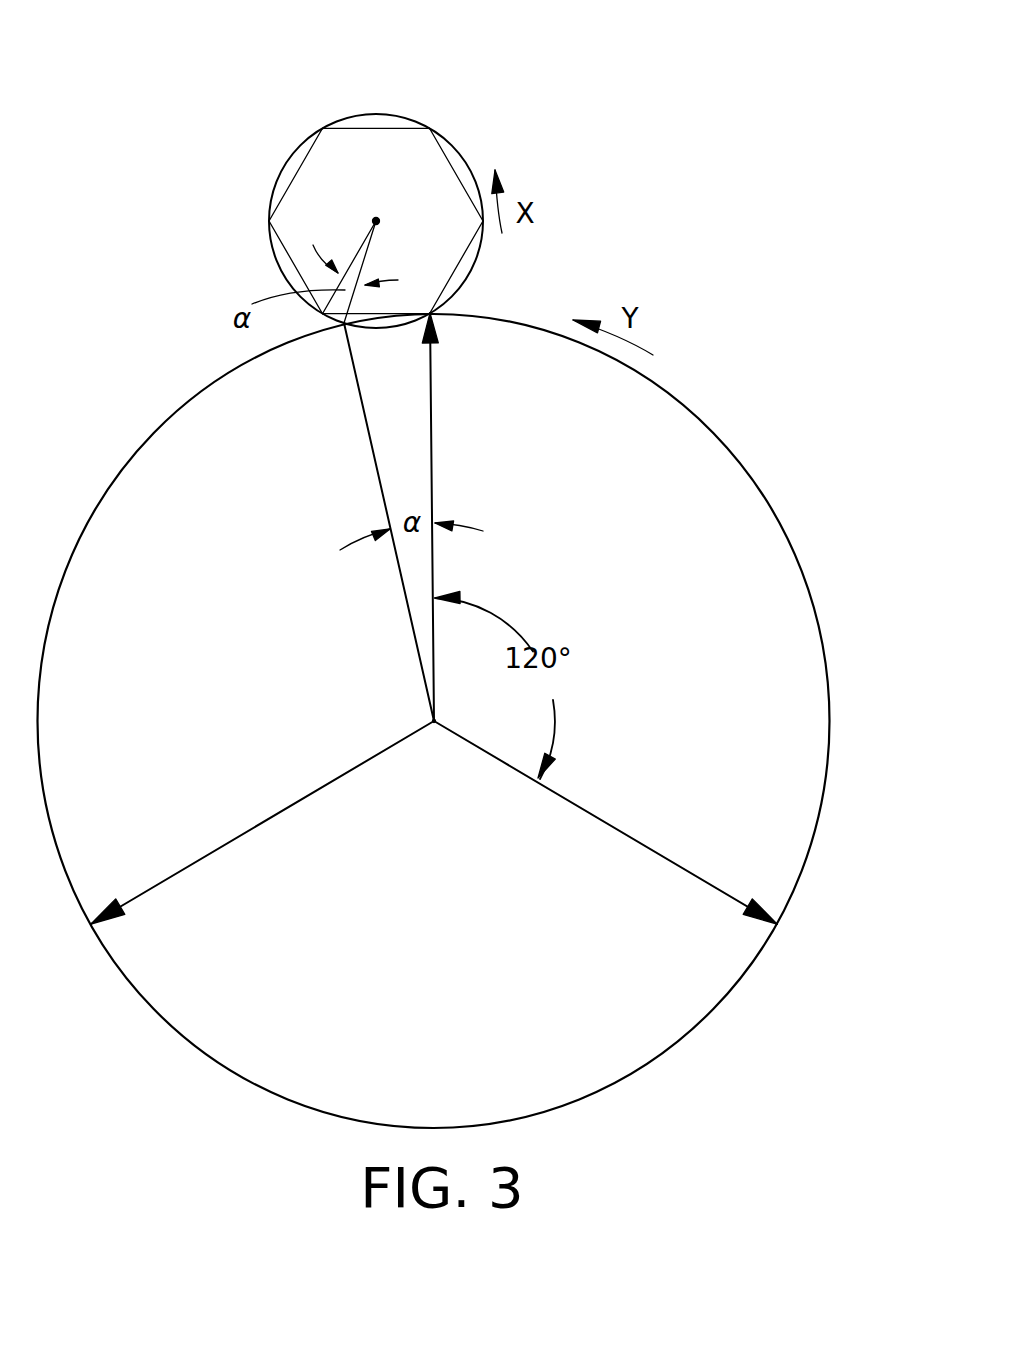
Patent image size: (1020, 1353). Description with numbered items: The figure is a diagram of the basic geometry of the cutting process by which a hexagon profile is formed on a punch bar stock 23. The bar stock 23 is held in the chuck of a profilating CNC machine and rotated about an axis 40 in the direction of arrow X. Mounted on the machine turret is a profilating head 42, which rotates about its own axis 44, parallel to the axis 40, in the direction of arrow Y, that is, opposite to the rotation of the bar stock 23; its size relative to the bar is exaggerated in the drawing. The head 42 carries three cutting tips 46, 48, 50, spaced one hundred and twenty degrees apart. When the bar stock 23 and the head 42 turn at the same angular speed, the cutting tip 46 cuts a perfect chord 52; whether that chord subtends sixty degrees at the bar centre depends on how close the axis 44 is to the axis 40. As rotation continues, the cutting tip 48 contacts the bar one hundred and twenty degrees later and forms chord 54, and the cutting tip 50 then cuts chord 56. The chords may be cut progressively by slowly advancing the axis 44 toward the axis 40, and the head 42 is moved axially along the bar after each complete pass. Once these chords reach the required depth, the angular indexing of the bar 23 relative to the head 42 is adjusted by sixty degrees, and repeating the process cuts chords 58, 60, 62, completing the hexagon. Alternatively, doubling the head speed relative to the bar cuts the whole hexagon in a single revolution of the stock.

The bar stock 23 is at (445, 138).
The axis 40 is at (376, 221).
The profilating head 42 is at (692, 487).
The axis 44 is at (434, 721).
The cutting tip 46 is at (436, 333).
The cutting tip 48 is at (767, 900).
The cutting tip 50 is at (98, 927).
The chord 52 is at (365, 315).
The chord 54 is at (289, 187).
The chord 56 is at (458, 183).
The chord 58 is at (284, 257).
The chord 60 is at (376, 126).
The chord 62 is at (455, 278).